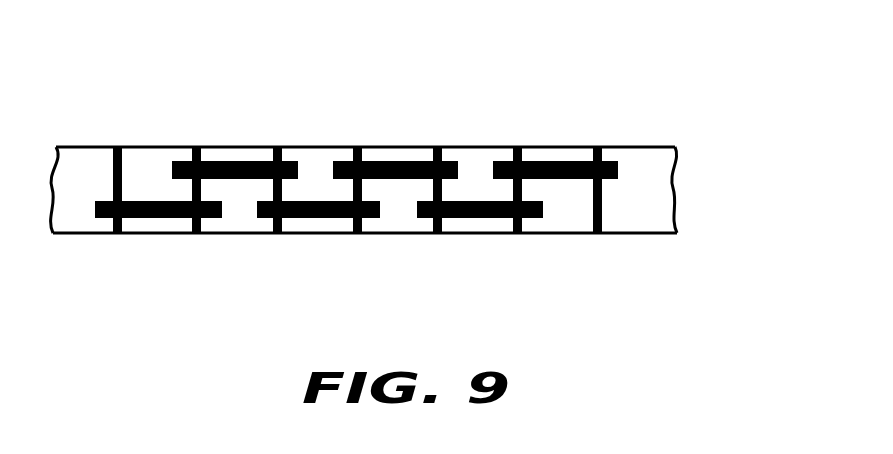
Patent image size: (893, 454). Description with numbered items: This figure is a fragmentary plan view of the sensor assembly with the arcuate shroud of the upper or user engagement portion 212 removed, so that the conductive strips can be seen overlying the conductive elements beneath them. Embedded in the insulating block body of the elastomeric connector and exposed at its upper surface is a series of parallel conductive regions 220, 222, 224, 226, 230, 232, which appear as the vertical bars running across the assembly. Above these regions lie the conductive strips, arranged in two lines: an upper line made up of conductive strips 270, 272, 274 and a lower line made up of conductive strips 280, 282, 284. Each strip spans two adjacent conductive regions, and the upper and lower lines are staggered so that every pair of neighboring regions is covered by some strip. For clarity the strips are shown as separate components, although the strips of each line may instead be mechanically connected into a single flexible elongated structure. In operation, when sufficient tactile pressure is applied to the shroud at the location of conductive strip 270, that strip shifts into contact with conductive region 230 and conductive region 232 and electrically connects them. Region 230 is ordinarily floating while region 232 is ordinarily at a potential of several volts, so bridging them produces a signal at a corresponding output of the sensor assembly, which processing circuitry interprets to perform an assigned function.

The upper or user engagement portion 212 is at (662, 199).
The conductive region 220 is at (106, 168).
The conductive region 222 is at (187, 155).
The conductive region 224 is at (288, 155).
The conductive region 226 is at (350, 155).
The conductive region 230 is at (514, 155).
The conductive region 232 is at (607, 155).
The conductive strip 270 is at (558, 162).
The conductive strip 272 is at (398, 162).
The conductive strip 274 is at (237, 162).
The conductive strip 280 is at (481, 220).
The conductive strip 282 is at (320, 220).
The conductive strip 284 is at (155, 220).